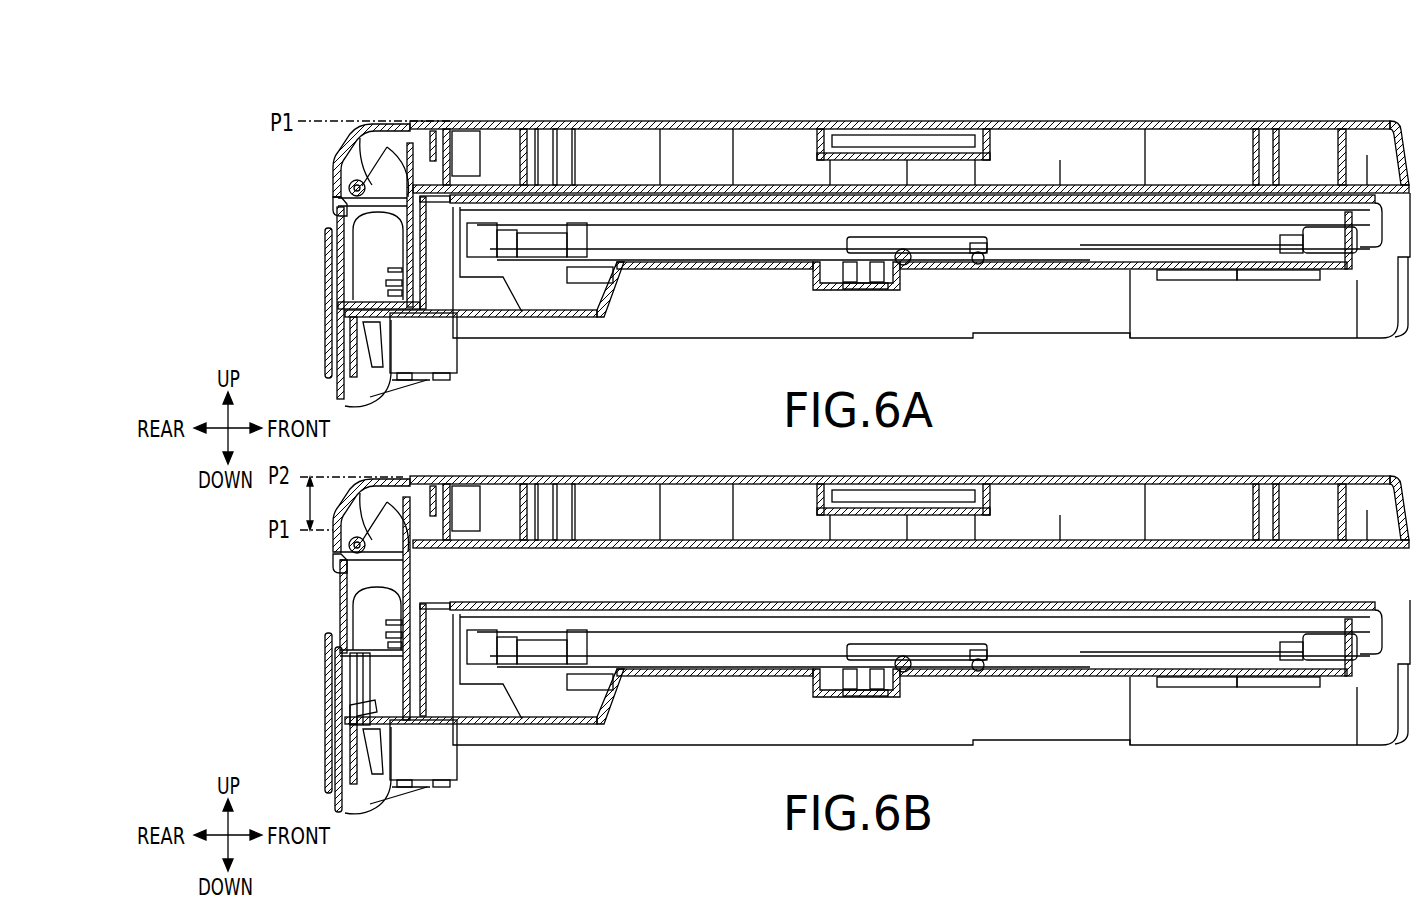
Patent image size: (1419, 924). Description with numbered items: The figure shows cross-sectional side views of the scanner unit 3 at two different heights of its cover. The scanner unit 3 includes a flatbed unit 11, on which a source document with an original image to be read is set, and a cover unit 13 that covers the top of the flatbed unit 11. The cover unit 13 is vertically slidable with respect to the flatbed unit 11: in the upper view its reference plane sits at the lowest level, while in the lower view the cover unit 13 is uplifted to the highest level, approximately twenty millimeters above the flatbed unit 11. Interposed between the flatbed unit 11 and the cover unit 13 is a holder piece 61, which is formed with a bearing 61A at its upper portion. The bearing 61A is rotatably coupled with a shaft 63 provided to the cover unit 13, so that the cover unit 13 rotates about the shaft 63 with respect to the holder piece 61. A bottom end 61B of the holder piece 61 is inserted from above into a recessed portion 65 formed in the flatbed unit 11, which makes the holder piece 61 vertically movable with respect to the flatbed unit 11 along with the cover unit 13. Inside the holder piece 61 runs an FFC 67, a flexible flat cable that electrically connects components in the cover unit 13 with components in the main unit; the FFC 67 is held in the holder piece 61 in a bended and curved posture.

In FIG. 6A, the scanner unit 3 is at (836, 227).
In FIG. 6B, the scanner unit 3 is at (833, 609).
In FIG. 6A, the flatbed unit 11 is at (1306, 339).
In FIG. 6B, the flatbed unit 11 is at (1306, 746).
In FIG. 6A, the cover unit 13 is at (1306, 118).
In FIG. 6B, the cover unit 13 is at (1306, 474).
In FIG. 6A, the holder piece 61 is at (328, 232).
In FIG. 6B, the holder piece 61 is at (337, 588).
In FIG. 6A, the bearing 61A is at (349, 184).
In FIG. 6B, the bearing 61A is at (333, 546).
In FIG. 6B, the bottom end 61B is at (377, 657).
In FIG. 6A, the shaft 63 is at (337, 207).
In FIG. 6B, the shaft 63 is at (332, 566).
In FIG. 6B, the recessed portion 65 is at (362, 710).
In FIG. 6A, the FFC 67 is at (366, 213).
In FIG. 6B, the FFC 67 is at (365, 600).